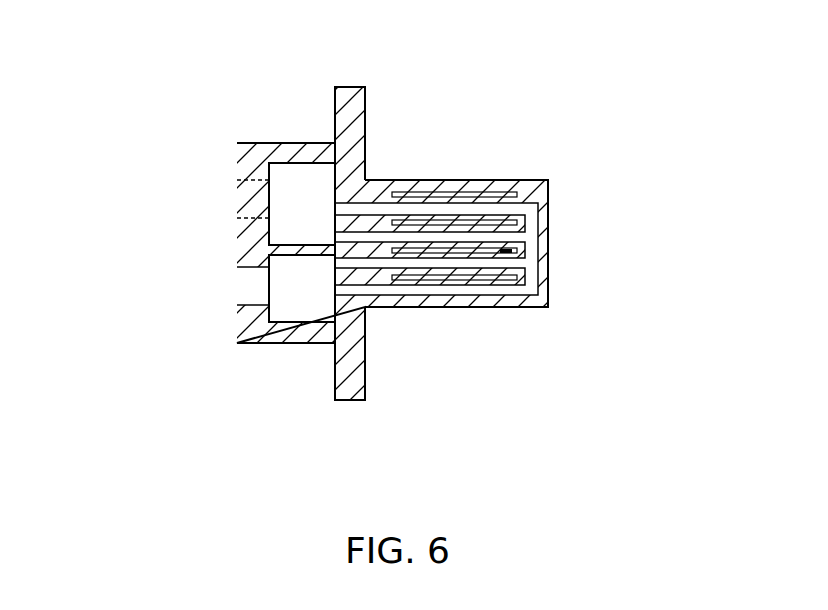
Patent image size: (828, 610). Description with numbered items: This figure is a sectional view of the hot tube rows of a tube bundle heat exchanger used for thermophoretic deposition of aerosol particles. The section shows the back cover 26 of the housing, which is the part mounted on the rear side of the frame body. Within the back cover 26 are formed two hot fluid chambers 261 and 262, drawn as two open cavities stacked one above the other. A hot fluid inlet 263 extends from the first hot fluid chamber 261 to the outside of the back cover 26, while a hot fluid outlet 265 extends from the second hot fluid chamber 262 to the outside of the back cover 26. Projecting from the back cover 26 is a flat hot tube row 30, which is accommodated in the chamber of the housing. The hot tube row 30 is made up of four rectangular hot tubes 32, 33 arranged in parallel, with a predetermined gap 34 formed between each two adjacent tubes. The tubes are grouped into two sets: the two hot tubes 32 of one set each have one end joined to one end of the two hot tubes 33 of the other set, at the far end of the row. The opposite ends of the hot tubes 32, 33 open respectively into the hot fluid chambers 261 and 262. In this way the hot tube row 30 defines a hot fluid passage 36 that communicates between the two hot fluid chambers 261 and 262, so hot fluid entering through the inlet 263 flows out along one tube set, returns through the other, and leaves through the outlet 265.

The back cover 26 is at (181, 112).
The hot fluid chamber 261 is at (295, 180).
The hot fluid chamber 262 is at (300, 297).
The hot fluid inlet 263 is at (243, 184).
The hot fluid outlet 265 is at (257, 305).
The hot tube row 30 is at (533, 155).
The hot tubes 32 is at (460, 228).
The hot tubes 33 is at (417, 253).
The gap 34 is at (505, 252).
The hot fluid passage 36 is at (533, 213).